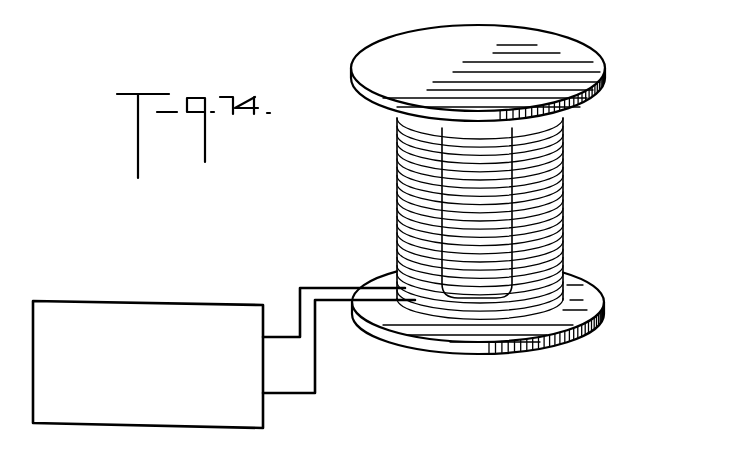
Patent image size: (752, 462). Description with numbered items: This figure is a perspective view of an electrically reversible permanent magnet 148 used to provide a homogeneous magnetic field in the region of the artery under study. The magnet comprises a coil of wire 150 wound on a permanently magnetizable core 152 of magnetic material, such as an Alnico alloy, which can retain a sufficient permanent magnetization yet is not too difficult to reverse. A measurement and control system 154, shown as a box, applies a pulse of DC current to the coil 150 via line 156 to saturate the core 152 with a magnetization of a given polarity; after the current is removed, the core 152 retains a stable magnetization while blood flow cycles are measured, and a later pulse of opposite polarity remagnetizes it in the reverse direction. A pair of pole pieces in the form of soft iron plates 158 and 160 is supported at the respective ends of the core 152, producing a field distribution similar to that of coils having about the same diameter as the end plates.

The electrically reversible permanent magnet 148 is at (511, 186).
The coil of wire 150 is at (397, 195).
The permanently magnetizable core 152 is at (514, 200).
The measurement and control system 154 is at (150, 301).
The line 156 is at (327, 287).
The soft iron plate 158 is at (563, 47).
The soft iron plate 160 is at (593, 297).